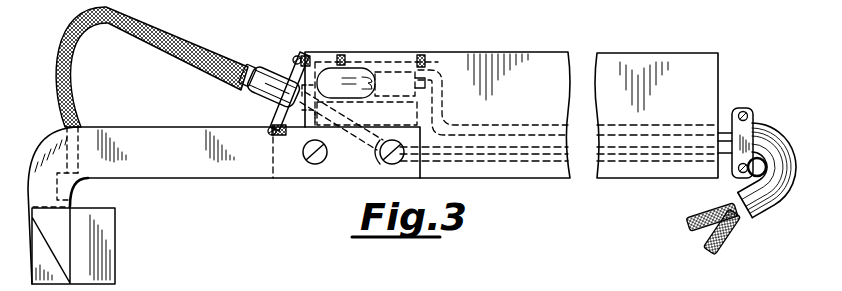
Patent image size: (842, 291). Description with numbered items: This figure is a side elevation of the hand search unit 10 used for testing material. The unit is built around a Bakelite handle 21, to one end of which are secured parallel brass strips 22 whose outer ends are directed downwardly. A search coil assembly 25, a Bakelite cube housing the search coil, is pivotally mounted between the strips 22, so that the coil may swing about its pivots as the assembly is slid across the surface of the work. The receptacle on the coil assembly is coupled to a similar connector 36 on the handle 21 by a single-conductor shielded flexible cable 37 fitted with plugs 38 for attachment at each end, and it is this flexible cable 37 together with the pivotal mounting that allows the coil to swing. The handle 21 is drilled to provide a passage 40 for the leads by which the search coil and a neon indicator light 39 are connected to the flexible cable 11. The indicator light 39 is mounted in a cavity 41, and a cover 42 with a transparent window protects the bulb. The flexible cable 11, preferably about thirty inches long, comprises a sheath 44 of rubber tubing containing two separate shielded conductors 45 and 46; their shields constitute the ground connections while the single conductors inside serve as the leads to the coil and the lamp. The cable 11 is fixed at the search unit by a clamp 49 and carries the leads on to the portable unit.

The hand search unit 10 is at (665, 38).
The flexible cable 11 is at (770, 212).
The Bakelite handle 21 is at (546, 52).
The brass strips 22 is at (192, 165).
The search coil assembly 25 is at (117, 262).
The connector 36 is at (285, 76).
The shielded flexible cable 37 is at (125, 28).
The plugs 38 is at (262, 70).
The neon indicator light 39 is at (392, 68).
The passage 40 is at (490, 120).
The cavity 41 is at (436, 58).
The cover 42 is at (358, 52).
The sheath 44 is at (786, 140).
The shielded conductor 45 is at (705, 212).
The shielded conductor 46 is at (729, 242).
The clamp 49 is at (745, 110).